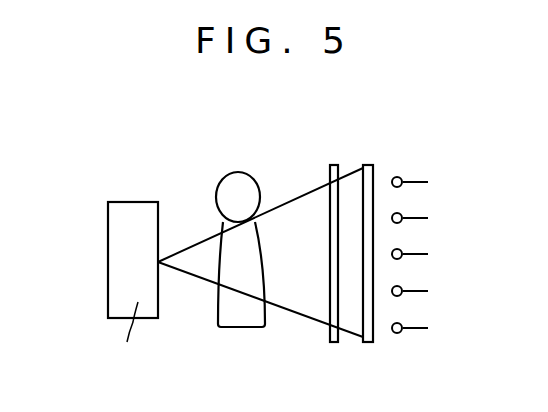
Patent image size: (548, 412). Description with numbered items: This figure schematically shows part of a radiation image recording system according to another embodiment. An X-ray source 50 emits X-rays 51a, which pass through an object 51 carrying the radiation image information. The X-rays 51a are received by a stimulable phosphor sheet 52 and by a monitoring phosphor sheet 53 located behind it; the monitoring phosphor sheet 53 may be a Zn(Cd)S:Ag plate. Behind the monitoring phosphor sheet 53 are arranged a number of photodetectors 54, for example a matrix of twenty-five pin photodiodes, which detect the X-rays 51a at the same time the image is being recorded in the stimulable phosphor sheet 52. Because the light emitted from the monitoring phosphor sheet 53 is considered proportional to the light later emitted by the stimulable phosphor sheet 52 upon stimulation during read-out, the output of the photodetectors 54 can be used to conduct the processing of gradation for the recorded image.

The X-ray source 50 is at (148, 267).
The object 51 is at (237, 322).
The X-rays 51a is at (297, 201).
The stimulable phosphor sheet 52 is at (334, 343).
The monitoring phosphor sheet 53 is at (368, 343).
The photodetectors 54 is at (397, 177).